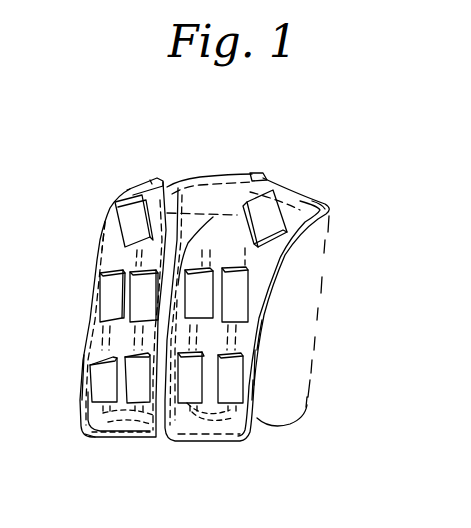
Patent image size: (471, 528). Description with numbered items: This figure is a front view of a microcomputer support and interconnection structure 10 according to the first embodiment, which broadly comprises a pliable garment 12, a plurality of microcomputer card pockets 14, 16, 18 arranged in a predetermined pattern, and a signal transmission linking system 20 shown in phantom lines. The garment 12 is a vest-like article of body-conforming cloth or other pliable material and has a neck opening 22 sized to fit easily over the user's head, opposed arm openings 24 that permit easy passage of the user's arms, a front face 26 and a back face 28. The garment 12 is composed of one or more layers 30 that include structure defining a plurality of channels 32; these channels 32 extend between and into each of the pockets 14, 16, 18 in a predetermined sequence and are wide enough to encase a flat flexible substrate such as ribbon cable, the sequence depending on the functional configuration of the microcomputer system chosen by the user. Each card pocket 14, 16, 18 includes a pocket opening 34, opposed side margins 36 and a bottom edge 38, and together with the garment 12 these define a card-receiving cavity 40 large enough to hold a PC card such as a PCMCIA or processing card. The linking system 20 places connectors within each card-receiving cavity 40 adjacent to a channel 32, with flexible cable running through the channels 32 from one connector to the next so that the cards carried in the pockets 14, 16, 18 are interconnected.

The microcomputer support and interconnection structure 10 is at (319, 167).
The pliable garment 12 is at (332, 207).
The microcomputer card pocket 14 is at (265, 267).
The microcomputer card pocket 16 is at (265, 298).
The microcomputer card pocket 18 is at (123, 200).
The signal transmission linking system 20 is at (95, 342).
The neck opening 22 is at (192, 197).
The arm openings 24 is at (295, 242).
The front face 26 is at (223, 438).
The back face 28 is at (260, 423).
The layers 30 is at (255, 398).
The channels 32 is at (262, 330).
The pocket opening 34 is at (86, 360).
The opposed side margins 36 is at (103, 409).
The bottom edge 38 is at (98, 435).
The card-receiving cavity 40 is at (258, 353).